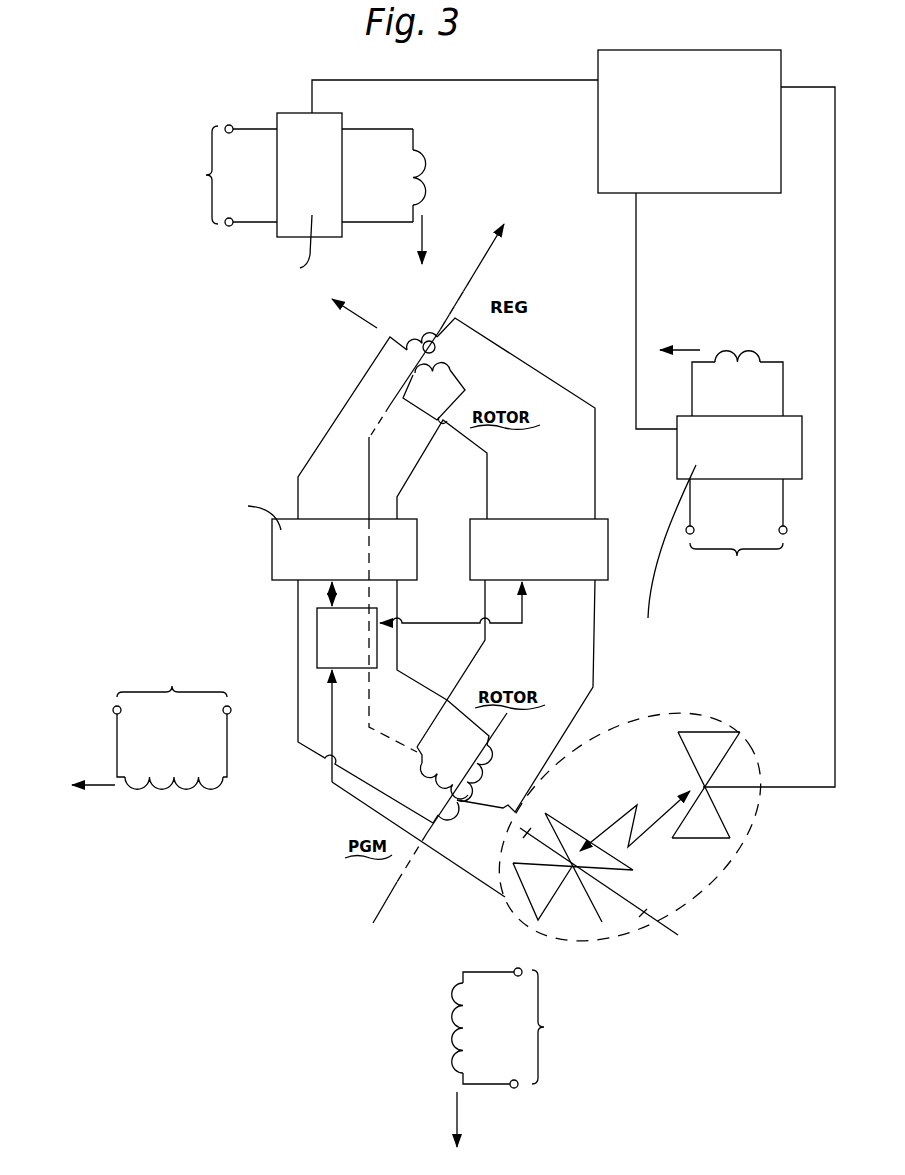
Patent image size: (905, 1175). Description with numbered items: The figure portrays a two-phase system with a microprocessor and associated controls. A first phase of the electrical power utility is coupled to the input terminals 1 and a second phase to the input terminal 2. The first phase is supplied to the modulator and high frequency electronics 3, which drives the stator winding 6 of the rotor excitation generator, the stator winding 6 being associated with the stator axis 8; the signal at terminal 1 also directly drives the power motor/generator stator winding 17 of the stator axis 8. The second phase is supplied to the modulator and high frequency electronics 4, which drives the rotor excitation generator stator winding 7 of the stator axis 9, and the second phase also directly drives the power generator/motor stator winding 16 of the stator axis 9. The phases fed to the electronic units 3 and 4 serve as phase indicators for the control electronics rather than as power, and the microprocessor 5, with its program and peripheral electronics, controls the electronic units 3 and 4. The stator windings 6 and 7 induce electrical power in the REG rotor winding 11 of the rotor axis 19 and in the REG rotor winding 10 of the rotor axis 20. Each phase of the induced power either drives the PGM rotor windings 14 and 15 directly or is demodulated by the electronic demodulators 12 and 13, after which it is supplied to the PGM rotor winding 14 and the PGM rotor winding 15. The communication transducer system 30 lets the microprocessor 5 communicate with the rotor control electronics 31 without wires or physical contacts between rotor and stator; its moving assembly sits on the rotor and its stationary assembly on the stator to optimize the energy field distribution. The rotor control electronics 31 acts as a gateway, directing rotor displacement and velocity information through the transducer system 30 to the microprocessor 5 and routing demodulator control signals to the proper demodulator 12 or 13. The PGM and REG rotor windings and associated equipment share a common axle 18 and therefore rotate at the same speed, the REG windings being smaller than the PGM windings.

The input terminals 1 is at (206, 175).
The input terminal 2 is at (450, 596).
The modulator and high frequency electronics 3 is at (300, 113).
The modulator and high frequency electronics 4 is at (802, 430).
The microprocessor 5 is at (744, 50).
The stator winding 6 is at (427, 148).
The stator winding 7 is at (762, 357).
The stator axis 8 is at (424, 228).
The stator axis 9 is at (698, 350).
The REG rotor winding 10 is at (451, 367).
The REG rotor winding 11 is at (405, 368).
The demodulator 12 is at (272, 562).
The demodulator 13 is at (470, 568).
The PGM rotor winding 14 is at (495, 756).
The PGM rotor winding 15 is at (487, 812).
The power generator/motor stator winding 16 is at (205, 795).
The power motor/generator stator winding 17 is at (450, 985).
The common axle 18 is at (369, 487).
The rotor axis 19 is at (492, 251).
The rotor axis 20 is at (357, 322).
The communication transducer system 30 is at (730, 830).
The rotor control electronics 31 is at (358, 670).